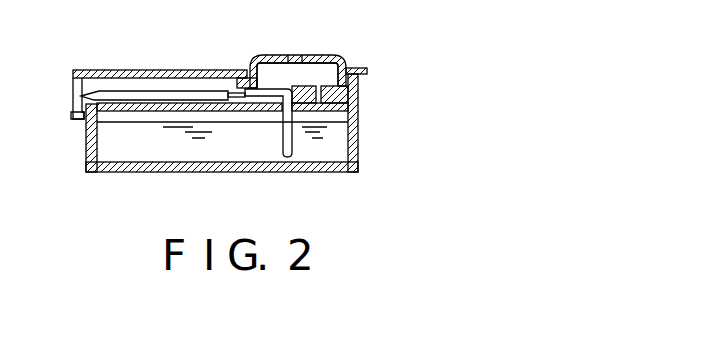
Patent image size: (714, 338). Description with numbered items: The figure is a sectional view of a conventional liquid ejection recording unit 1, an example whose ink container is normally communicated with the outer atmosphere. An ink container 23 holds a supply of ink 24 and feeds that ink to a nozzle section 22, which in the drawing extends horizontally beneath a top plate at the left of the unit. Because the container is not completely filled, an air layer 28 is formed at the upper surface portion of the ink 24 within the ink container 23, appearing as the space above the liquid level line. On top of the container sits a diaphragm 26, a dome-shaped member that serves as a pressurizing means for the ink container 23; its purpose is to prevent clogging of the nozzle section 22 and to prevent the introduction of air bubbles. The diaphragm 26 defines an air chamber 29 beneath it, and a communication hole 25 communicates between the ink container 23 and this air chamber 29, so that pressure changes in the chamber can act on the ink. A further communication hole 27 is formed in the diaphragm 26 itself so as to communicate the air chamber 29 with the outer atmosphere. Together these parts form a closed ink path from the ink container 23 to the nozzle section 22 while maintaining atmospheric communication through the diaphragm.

The liquid ejection recording unit 1 is at (179, 59).
The nozzle section 22 is at (108, 92).
The ink container 23 is at (273, 174).
The ink 24 is at (337, 147).
The communication hole 25 is at (358, 93).
The diaphragm 26 is at (328, 55).
The communication hole 27 is at (298, 55).
The air layer 28 is at (337, 115).
The air chamber 29 is at (329, 72).